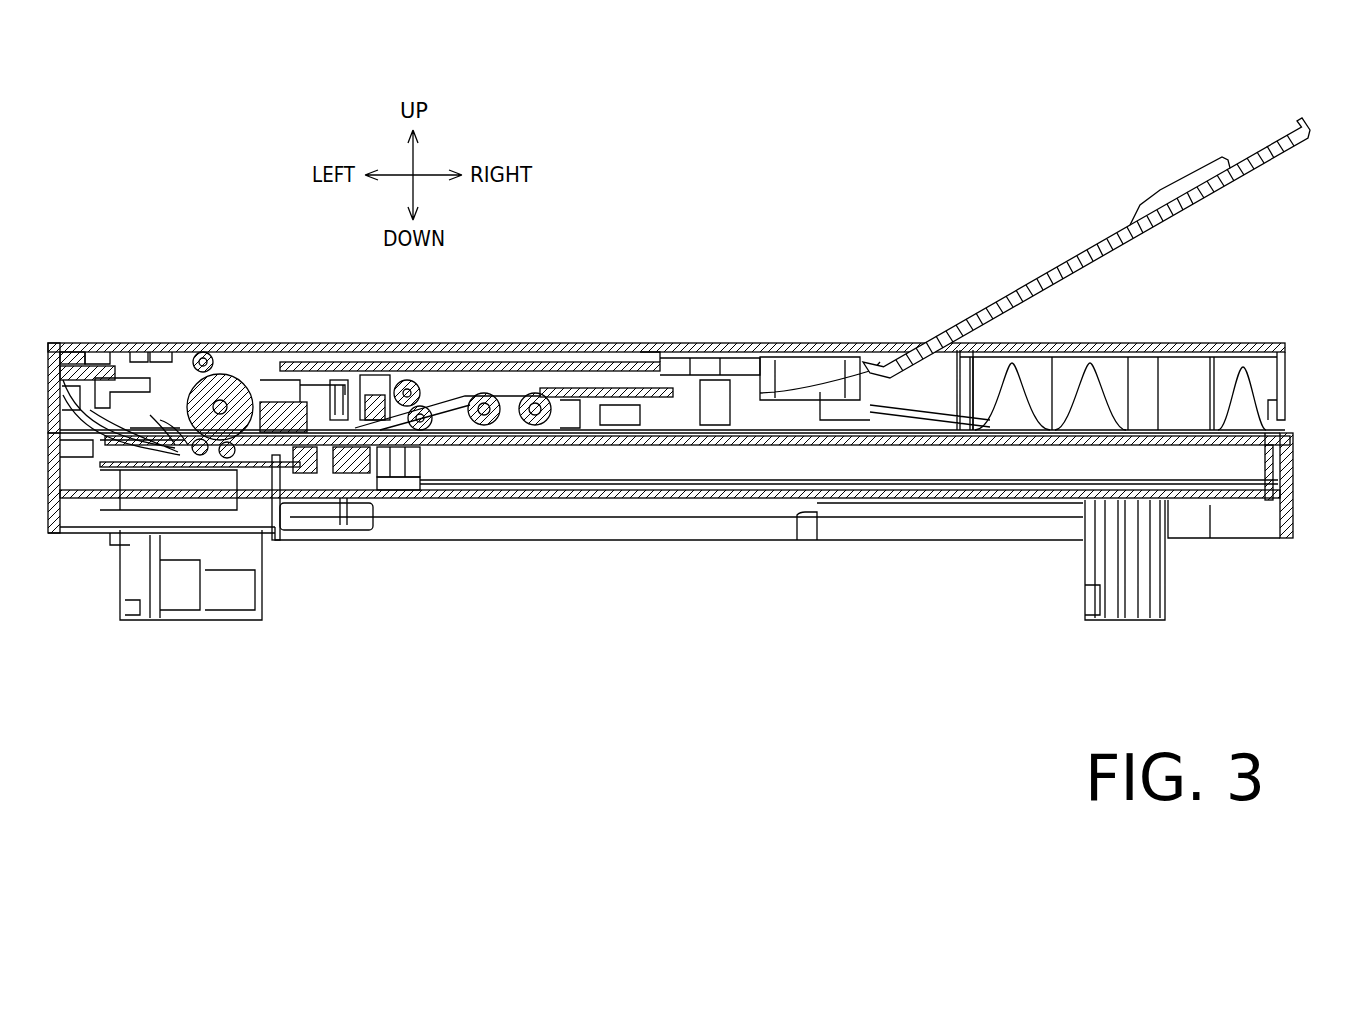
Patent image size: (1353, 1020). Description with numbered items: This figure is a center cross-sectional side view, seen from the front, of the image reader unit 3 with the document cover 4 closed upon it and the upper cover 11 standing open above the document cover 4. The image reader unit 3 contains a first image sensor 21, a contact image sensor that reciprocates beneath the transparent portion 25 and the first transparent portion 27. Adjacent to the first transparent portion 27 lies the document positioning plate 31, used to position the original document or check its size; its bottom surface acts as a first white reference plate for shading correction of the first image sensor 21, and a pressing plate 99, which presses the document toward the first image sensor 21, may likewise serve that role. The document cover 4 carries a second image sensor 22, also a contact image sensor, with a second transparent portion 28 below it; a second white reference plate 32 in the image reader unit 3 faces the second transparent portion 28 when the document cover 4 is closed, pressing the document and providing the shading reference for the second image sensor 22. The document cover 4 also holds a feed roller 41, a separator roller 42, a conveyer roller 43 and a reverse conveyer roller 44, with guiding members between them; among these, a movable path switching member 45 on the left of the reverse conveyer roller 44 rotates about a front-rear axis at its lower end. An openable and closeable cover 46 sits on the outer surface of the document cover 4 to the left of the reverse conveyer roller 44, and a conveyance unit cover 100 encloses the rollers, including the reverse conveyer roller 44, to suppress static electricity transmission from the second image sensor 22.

The image reader unit 3 is at (1240, 527).
The document cover 4 is at (1148, 345).
The upper cover 11 is at (1085, 255).
The first image sensor 21 is at (368, 497).
The second image sensor 22 is at (292, 385).
The transparent portion 25 is at (647, 445).
The first transparent portion 27 is at (340, 473).
The second transparent portion 28 is at (310, 447).
The document positioning plate 31 is at (377, 392).
The second white reference plate 32 is at (275, 462).
The feed roller 41 is at (538, 430).
The separator roller 42 is at (473, 430).
The conveyer roller 43 is at (410, 382).
The reverse conveyer roller 44 is at (233, 378).
The path switching member 45 is at (165, 455).
The openable and closeable cover 46 is at (55, 343).
The pressing plate 99 is at (340, 395).
The conveyance unit cover 100 is at (313, 383).